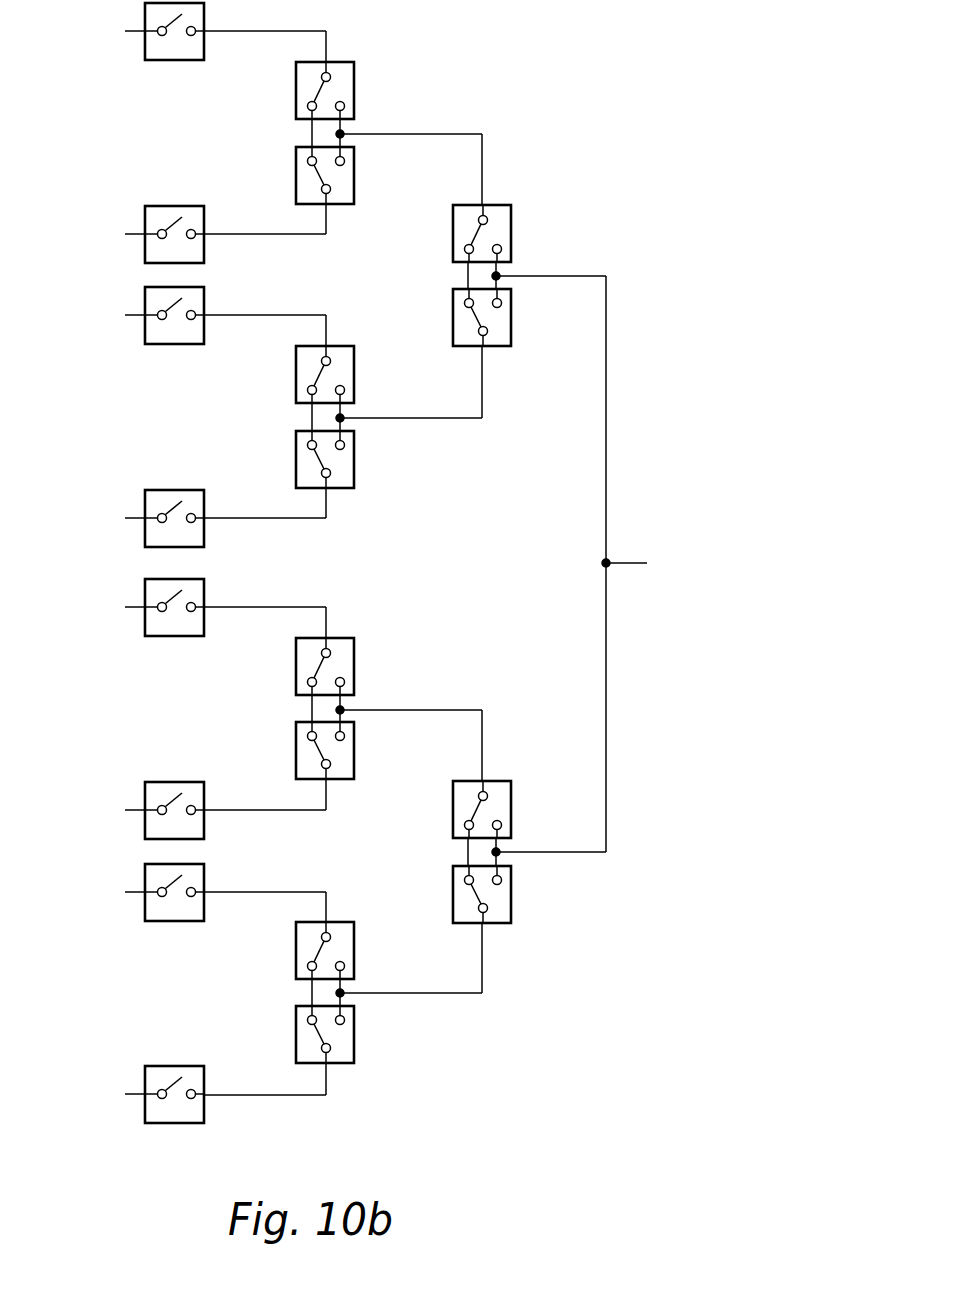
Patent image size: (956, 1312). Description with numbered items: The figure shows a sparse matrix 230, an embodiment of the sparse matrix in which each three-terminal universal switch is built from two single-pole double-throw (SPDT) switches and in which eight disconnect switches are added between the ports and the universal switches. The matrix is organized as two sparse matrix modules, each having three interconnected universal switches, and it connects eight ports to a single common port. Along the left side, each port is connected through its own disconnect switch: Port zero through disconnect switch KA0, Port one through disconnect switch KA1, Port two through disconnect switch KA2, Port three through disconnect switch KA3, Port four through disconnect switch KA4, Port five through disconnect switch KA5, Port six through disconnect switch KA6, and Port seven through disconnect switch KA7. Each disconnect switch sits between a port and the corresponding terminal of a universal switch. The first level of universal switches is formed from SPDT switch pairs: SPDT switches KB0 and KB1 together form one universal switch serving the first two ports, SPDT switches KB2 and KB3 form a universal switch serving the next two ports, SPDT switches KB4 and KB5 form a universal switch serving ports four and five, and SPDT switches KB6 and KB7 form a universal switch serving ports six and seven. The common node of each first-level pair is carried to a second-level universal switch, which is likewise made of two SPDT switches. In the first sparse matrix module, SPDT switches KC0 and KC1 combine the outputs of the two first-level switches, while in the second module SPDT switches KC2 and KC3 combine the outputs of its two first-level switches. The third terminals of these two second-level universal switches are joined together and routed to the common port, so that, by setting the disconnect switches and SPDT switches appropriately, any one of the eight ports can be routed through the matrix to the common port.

The sparse matrix 230 is at (589, 94).
The disconnect switch KA0 is at (164, 48).
The disconnect switch KA1 is at (164, 217).
The disconnect switch KA2 is at (164, 332).
The disconnect switch KA3 is at (164, 501).
The disconnect switch KA4 is at (164, 624).
The disconnect switch KA5 is at (164, 793).
The disconnect switch KA6 is at (164, 909).
The disconnect switch KA7 is at (164, 1077).
The SPDT switch KB0 is at (353, 90).
The SPDT switch KB1 is at (353, 175).
The SPDT switch KB2 is at (353, 374).
The SPDT switch KB3 is at (353, 459).
The SPDT switch KB4 is at (353, 666).
The SPDT switch KB5 is at (353, 750).
The SPDT switch KB6 is at (353, 950).
The SPDT switch KB7 is at (353, 1034).
The SPDT switch KC0 is at (511, 233).
The SPDT switch KC1 is at (511, 317).
The SPDT switch KC2 is at (511, 809).
The SPDT switch KC3 is at (511, 894).